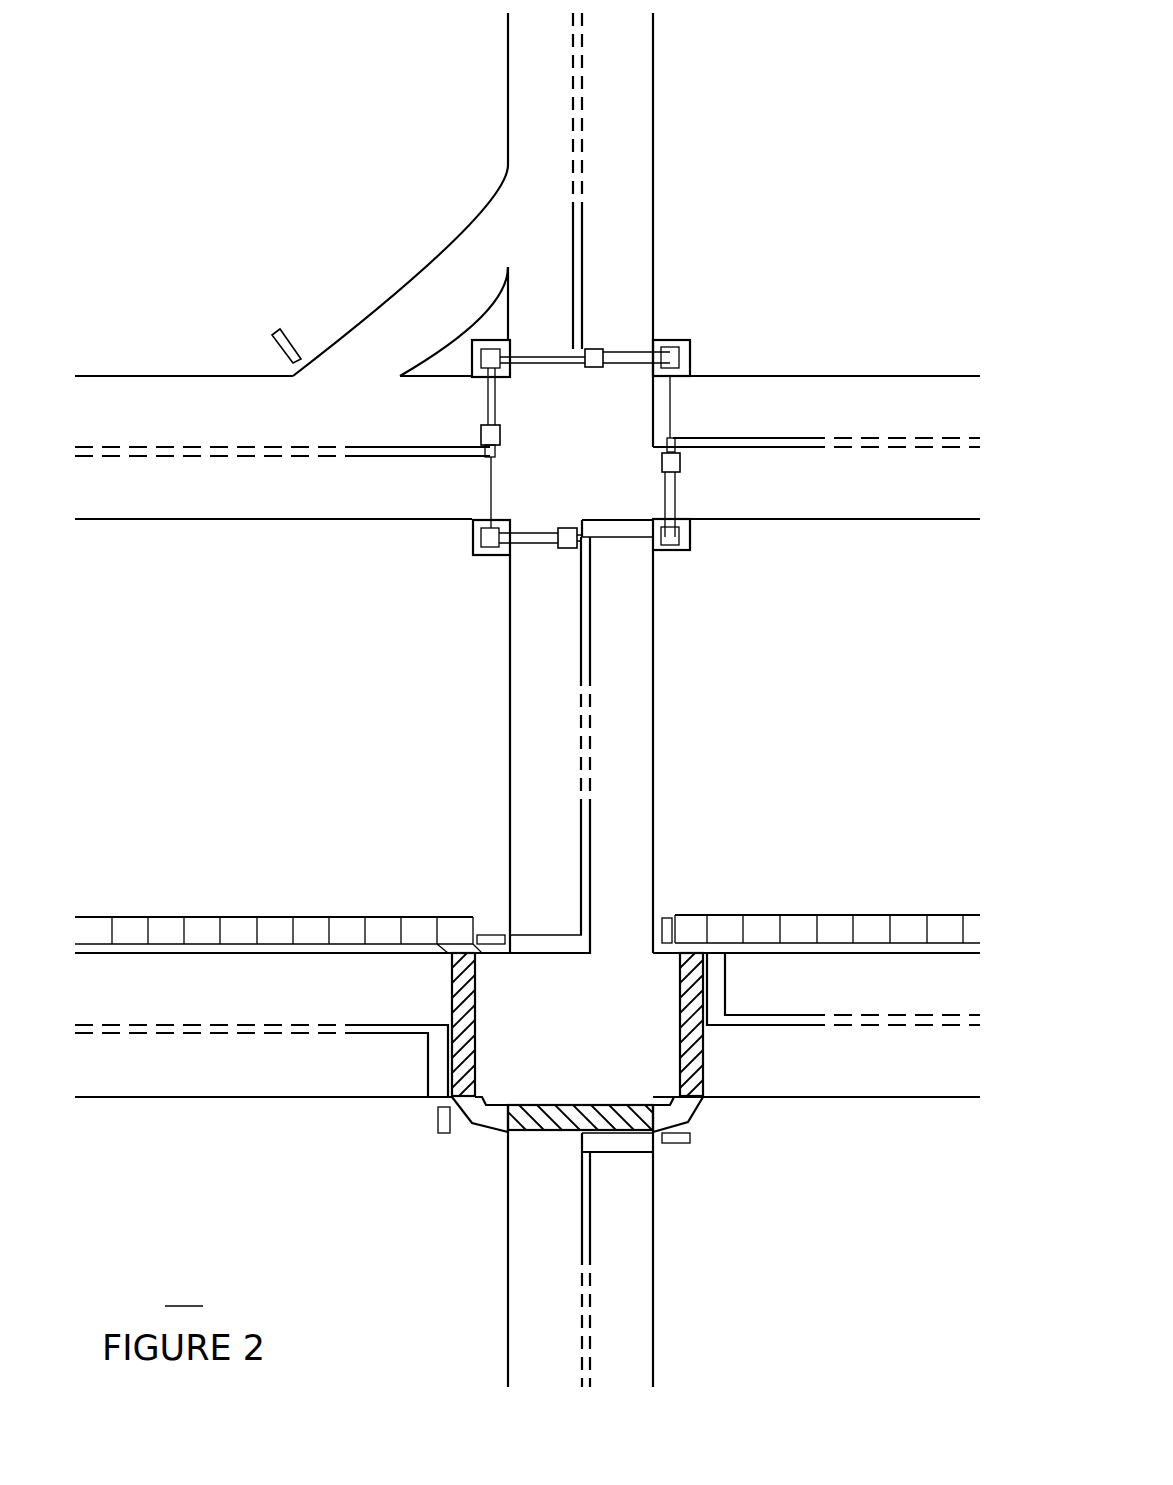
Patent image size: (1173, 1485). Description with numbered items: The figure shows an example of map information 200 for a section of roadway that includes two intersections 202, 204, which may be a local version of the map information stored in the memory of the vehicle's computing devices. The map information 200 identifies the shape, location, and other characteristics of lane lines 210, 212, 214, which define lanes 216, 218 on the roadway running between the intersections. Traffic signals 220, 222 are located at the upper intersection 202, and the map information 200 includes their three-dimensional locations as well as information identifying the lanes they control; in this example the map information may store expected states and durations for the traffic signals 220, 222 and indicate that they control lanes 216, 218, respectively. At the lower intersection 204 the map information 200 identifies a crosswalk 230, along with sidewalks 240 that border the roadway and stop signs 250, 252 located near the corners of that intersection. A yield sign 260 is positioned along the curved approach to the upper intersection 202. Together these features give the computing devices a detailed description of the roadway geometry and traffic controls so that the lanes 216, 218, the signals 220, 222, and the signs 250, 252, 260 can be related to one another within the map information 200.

The map information 200 is at (527, 700).
The intersection 202 is at (581, 447).
The intersection 204 is at (577, 1024).
The lane line 210 is at (510, 710).
The lane line 212 is at (592, 652).
The lane line 214 is at (653, 593).
The lane 216 is at (621, 745).
The lane 218 is at (545, 745).
The traffic signal 220 is at (605, 350).
The traffic signal 222 is at (556, 548).
The crosswalk 230 is at (508, 1112).
The sidewalk 240 is at (752, 915).
The stop sign 250 is at (490, 935).
The stop sign 252 is at (690, 1138).
The yield sign 260 is at (270, 338).